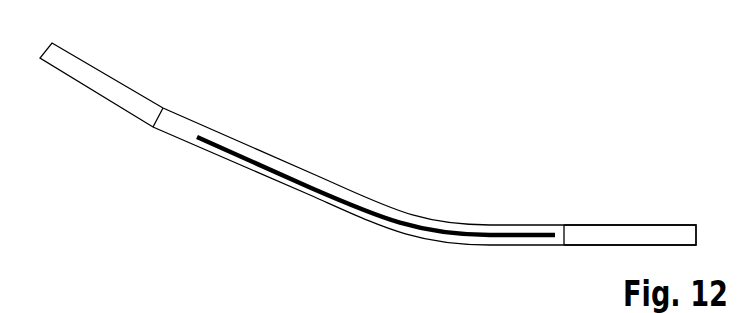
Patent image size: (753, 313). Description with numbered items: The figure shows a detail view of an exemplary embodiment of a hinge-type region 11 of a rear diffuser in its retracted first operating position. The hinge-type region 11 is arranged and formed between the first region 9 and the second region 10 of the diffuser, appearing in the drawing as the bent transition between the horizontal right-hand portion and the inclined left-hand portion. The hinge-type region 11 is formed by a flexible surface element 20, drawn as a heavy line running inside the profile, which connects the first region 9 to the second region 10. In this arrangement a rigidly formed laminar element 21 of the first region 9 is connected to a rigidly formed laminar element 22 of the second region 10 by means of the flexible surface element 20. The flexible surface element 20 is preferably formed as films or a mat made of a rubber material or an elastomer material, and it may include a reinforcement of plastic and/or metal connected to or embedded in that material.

The first region 9 is at (606, 237).
The second region 10 is at (97, 77).
The hinge-type region 11 is at (484, 143).
The flexible surface element 20 is at (386, 212).
The rigidly formed laminar element 21 is at (666, 235).
The rigidly formed laminar element 22 is at (147, 103).